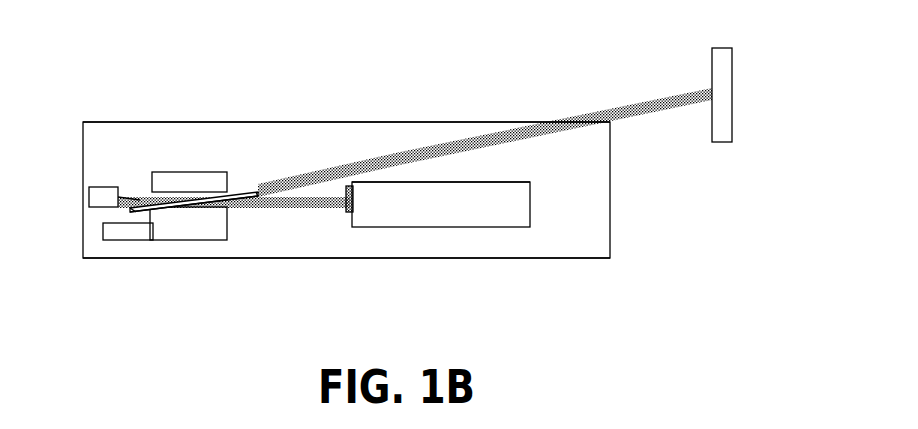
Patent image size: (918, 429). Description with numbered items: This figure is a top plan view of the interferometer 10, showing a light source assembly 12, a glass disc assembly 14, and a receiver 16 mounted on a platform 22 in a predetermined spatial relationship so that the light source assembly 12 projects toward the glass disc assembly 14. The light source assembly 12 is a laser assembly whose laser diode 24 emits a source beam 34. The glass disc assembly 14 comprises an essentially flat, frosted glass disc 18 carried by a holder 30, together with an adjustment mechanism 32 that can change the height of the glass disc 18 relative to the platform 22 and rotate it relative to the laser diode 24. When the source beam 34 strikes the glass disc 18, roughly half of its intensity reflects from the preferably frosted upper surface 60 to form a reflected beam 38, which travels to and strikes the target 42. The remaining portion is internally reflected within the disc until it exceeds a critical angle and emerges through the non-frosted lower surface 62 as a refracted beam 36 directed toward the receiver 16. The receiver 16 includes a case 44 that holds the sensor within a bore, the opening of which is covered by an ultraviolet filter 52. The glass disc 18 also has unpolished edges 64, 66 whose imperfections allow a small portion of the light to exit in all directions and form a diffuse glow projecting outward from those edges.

The interferometer 10 is at (345, 72).
The light source assembly 12 is at (95, 216).
The glass disc assembly 14 is at (207, 252).
The receiver 16 is at (456, 230).
The glass disc 18 is at (233, 198).
The platform 22 is at (124, 122).
The laser diode 24 is at (93, 196).
The holder 30 is at (175, 172).
The adjustment mechanism 32 is at (123, 241).
The source beam 34 is at (140, 199).
The refracted beam 36 is at (298, 200).
The reflected beam 38 is at (357, 162).
The target 42 is at (732, 88).
The case 44 is at (528, 184).
The ultraviolet filter 52 is at (349, 214).
The upper surface 60 is at (183, 198).
The lower surface 62 is at (153, 212).
The unpolished edge 64 is at (127, 210).
The unpolished edge 66 is at (260, 196).